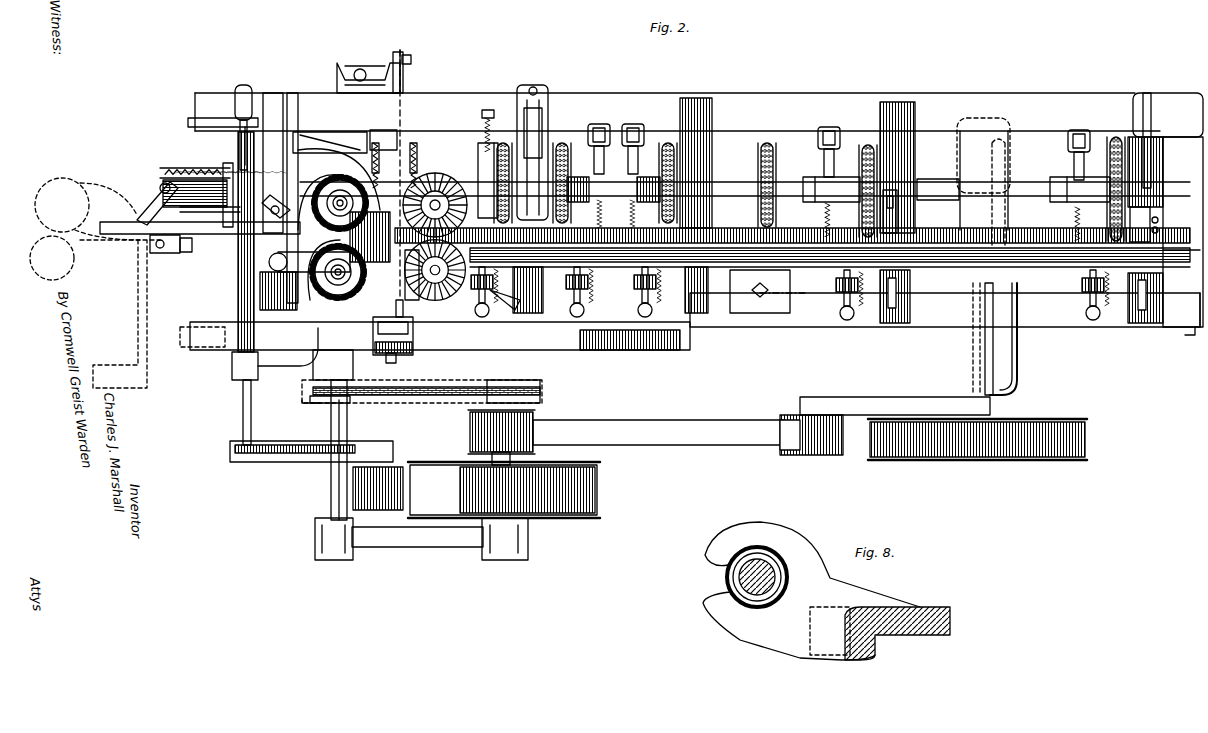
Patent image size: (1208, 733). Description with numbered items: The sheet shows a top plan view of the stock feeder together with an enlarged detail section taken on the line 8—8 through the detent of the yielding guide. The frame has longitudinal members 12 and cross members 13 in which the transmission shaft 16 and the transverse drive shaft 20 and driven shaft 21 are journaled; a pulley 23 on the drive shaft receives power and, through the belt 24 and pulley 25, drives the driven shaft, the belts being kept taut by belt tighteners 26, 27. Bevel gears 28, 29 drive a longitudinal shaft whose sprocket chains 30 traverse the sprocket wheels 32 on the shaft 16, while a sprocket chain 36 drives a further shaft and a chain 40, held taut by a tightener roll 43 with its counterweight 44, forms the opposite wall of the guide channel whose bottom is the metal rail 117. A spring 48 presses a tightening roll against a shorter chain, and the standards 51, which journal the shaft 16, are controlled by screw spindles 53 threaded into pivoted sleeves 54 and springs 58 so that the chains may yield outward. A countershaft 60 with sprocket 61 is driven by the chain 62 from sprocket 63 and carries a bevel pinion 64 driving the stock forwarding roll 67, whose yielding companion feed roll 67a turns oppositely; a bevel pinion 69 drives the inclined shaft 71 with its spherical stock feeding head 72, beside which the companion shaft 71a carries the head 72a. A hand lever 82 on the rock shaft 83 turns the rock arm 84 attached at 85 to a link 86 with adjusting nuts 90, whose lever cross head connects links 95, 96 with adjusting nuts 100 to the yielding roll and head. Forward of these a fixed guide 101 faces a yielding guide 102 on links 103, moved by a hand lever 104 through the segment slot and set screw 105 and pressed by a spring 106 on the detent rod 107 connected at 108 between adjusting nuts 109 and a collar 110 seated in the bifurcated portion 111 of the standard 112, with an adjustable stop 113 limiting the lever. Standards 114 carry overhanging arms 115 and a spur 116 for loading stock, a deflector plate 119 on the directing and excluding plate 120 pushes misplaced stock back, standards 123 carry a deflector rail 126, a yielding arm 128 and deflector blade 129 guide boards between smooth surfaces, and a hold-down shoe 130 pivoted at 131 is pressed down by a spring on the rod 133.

In FIG. 2, the section line 8— 8 is at (210, 156).
In FIG. 2, the longitudinal members 12 is at (1040, 104).
In FIG. 2, the cross members 13 is at (1168, 210).
In FIG. 2, the transmission shaft 16 is at (960, 185).
In FIG. 2, the drive shaft 20 is at (512, 458).
In FIG. 2, the driven shaft 21 is at (970, 350).
In FIG. 2, the pulley 23 is at (592, 520).
In FIG. 2, the belt 24 is at (738, 425).
In FIG. 2, the pulley 25 is at (1035, 458).
In FIG. 2, the belt tightener 26 is at (365, 500).
In FIG. 2, the belt tightener 27 is at (805, 457).
In FIG. 2, the bevel gear 28 is at (950, 264).
In FIG. 2, the bevel gear 29 is at (998, 140).
In FIG. 2, the sprocket chains 30 is at (696, 100).
In FIG. 2, the sprocket wheels 32 is at (565, 140).
In FIG. 2, the sprocket chain 36 is at (772, 150).
In FIG. 2, the chain 40 is at (582, 282).
In FIG. 2, the tightener roll 43 is at (560, 300).
In FIG. 2, the counterweight 44 is at (1093, 318).
In FIG. 2, the spring 48 is at (488, 110).
In FIG. 2, the vertical standard 51 is at (578, 175).
In FIG. 2, the screw spindle 53 is at (604, 150).
In FIG. 2, the sleeve 54 is at (604, 135).
In FIG. 2, the spring 58 is at (603, 210).
In FIG. 2, the countershaft 60 is at (347, 425).
In FIG. 2, the sprocket 61 is at (310, 403).
In FIG. 2, the chain 62 is at (425, 387).
In FIG. 2, the sprocket 63 is at (512, 385).
In FIG. 2, the bevel pinion 64 is at (310, 392).
In FIG. 2, the stock forwarding roll 67 is at (353, 358).
In FIG. 2, the feed roll 67a is at (342, 175).
In FIG. 2, the bevel pinion 69 is at (520, 335).
In FIG. 2, the shaft 71 is at (425, 305).
In FIG. 2, the companion shaft 71a is at (430, 175).
In FIG. 2, the stock feeding head 72 is at (450, 300).
In FIG. 2, the stock feeding head 72a is at (445, 175).
In FIG. 2, the hand lever 82 is at (366, 72).
In FIG. 2, the rock shaft 83 is at (350, 70).
In FIG. 2, the rock arm 84 is at (400, 52).
In FIG. 2, the attachment point 85 is at (410, 58).
In FIG. 2, the link 86 is at (402, 82).
In FIG. 2, the adjusting nuts 90 is at (395, 360).
In FIG. 2, the link 95 is at (386, 317).
In FIG. 2, the link 96 is at (408, 304).
In FIG. 2, the adjusting nuts 100 is at (382, 130).
In FIG. 2, the fixed guide 101 is at (168, 260).
In FIG. 2, the yielding guide 102 is at (112, 205).
In FIG. 2, the links 103 is at (150, 205).
In FIG. 2, the hand lever 104 is at (292, 100).
In FIG. 2, the segment slot and set screw 105 is at (240, 265).
In FIG. 2, the spring 106 is at (195, 118).
In FIG. 2, the detent rod 107 is at (228, 165).
In FIG. 8, the detent rod 107 is at (770, 565).
In FIG. 2, the connection point 108 is at (312, 135).
In FIG. 2, the adjusting nuts 109 is at (168, 168).
In FIG. 2, the collar 110 is at (195, 199).
In FIG. 8, the bifurcated portion 111 is at (725, 575).
In FIG. 2, the standard 112 is at (232, 240).
In FIG. 8, the standard 112 is at (848, 603).
In FIG. 2, the adjustable stop 113 is at (277, 130).
In FIG. 2, the standards 114 is at (548, 95).
In FIG. 2, the overhanging arms 115 is at (1152, 130).
In FIG. 2, the spur 116 is at (533, 90).
In FIG. 2, the metal rail 117 is at (728, 228).
In FIG. 2, the deflector plate 119 is at (370, 237).
In FIG. 2, the directing and excluding plate 120 is at (320, 322).
In FIG. 2, the standards 123 is at (905, 165).
In FIG. 2, the deflector rail 126 is at (778, 313).
In FIG. 2, the arm 128 is at (1110, 222).
In FIG. 2, the deflector blade 129 is at (528, 175).
In FIG. 2, the hold-down shoe 130 is at (175, 255).
In FIG. 2, the pivot 131 is at (243, 404).
In FIG. 2, the rod 133 is at (152, 248).